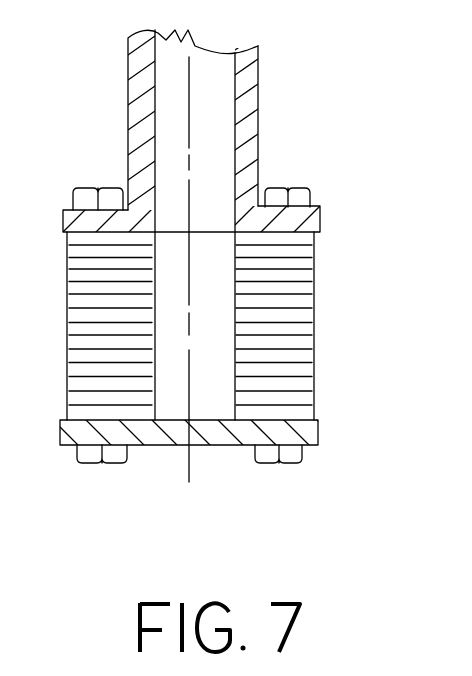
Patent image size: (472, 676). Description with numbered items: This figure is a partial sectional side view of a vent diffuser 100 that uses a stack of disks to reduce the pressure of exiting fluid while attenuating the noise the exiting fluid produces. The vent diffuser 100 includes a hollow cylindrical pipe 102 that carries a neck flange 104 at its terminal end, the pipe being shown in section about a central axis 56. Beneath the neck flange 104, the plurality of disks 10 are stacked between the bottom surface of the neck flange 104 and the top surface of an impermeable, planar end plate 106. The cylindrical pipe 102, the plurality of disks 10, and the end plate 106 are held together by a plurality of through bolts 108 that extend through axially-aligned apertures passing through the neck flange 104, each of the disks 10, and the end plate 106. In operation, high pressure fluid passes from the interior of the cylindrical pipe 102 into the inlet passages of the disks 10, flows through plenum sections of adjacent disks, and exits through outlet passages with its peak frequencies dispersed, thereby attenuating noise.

The plurality of disks 10 is at (322, 300).
The central axis 56 is at (189, 113).
The vent diffuser 100 is at (265, 212).
The cylindrical pipe 102 is at (258, 128).
The neck flange 104 is at (316, 216).
The end plate 106 is at (320, 432).
The through bolts 108 is at (91, 189).